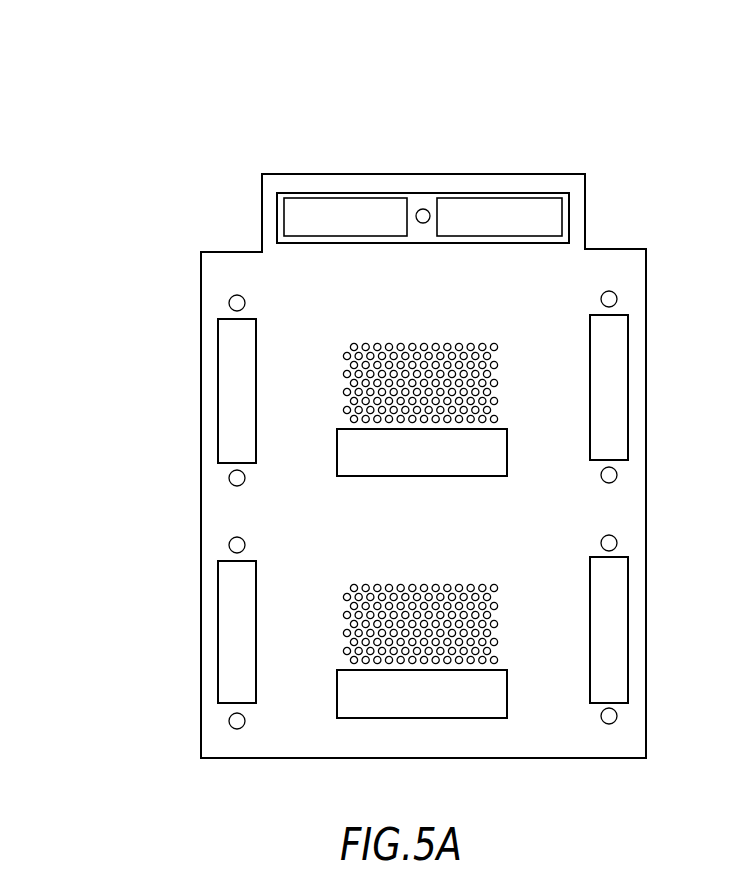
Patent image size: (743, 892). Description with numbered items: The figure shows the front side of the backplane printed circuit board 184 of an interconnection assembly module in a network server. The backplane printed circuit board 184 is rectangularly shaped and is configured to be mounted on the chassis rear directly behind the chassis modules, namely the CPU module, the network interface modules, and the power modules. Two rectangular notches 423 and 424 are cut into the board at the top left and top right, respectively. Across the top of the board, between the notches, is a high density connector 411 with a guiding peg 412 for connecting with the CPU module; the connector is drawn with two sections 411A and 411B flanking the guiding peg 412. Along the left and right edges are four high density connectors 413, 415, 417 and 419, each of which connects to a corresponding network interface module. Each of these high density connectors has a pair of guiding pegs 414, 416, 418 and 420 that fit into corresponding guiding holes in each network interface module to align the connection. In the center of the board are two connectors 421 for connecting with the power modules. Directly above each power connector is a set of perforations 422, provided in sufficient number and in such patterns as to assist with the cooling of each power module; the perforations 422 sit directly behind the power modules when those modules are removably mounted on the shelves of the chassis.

The backplane printed circuit board 184 is at (268, 95).
The high density connector 411 is at (417, 200).
The first connector section 411A is at (332, 213).
The second connector section 411B is at (511, 212).
The guiding peg 412 is at (423, 223).
The high density connector 413 is at (218, 390).
The guiding pegs 414 is at (229, 300).
The high density connector 415 is at (218, 632).
The guiding pegs 416 is at (229, 543).
The high density connector 417 is at (628, 390).
The guiding pegs 418 is at (617, 297).
The high density connector 419 is at (628, 630).
The guiding pegs 420 is at (617, 541).
The connectors 421 is at (428, 477).
The perforations 422 is at (410, 347).
The rectangular notch 423 is at (236, 232).
The rectangular notch 424 is at (610, 230).